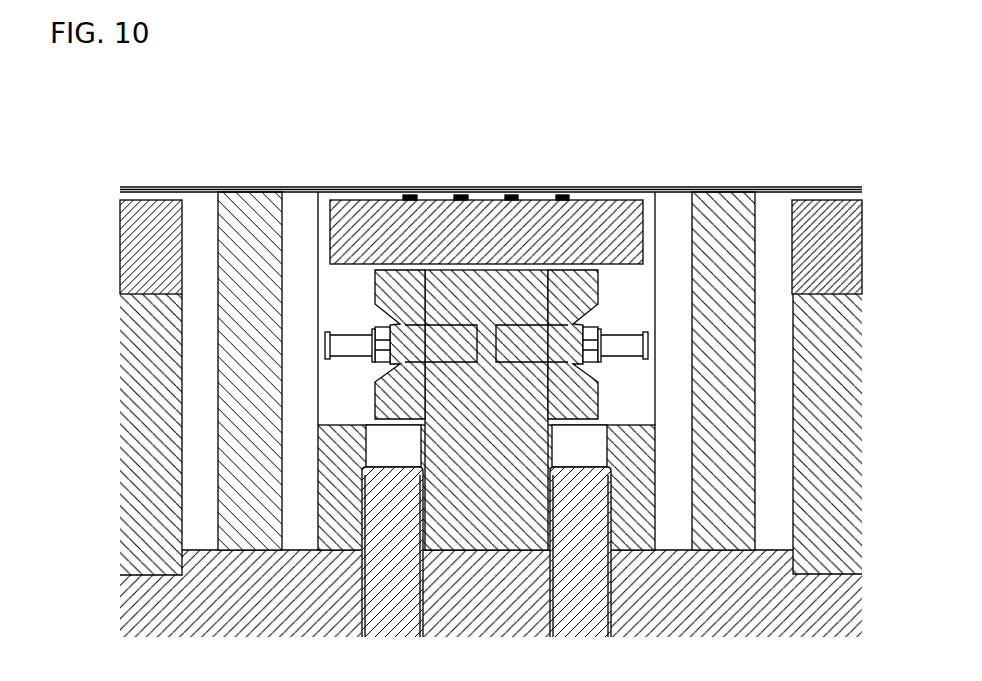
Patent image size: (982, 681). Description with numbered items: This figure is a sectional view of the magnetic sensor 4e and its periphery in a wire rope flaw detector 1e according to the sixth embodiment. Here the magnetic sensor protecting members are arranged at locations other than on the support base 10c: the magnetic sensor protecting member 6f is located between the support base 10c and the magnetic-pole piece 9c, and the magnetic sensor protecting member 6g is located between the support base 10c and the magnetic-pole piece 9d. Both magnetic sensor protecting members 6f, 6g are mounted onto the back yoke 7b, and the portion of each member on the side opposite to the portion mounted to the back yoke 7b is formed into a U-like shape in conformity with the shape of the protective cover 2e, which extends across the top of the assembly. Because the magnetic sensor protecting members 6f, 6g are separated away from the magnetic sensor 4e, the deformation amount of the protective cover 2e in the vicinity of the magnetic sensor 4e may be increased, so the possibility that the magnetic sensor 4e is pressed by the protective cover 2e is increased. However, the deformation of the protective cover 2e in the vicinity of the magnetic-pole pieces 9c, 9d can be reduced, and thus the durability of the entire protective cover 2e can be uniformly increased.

The wire rope flaw detector 1e is at (692, 175).
The protective cover 2e is at (533, 187).
The magnetic sensor 4e is at (462, 197).
The support base 10c is at (357, 227).
The magnetic-pole piece 9c is at (158, 267).
The magnetic-pole piece 9d is at (813, 250).
The magnetic sensor protecting member 6f is at (247, 338).
The magnetic sensor protecting member 6g is at (743, 338).
The back yoke 7b is at (743, 568).